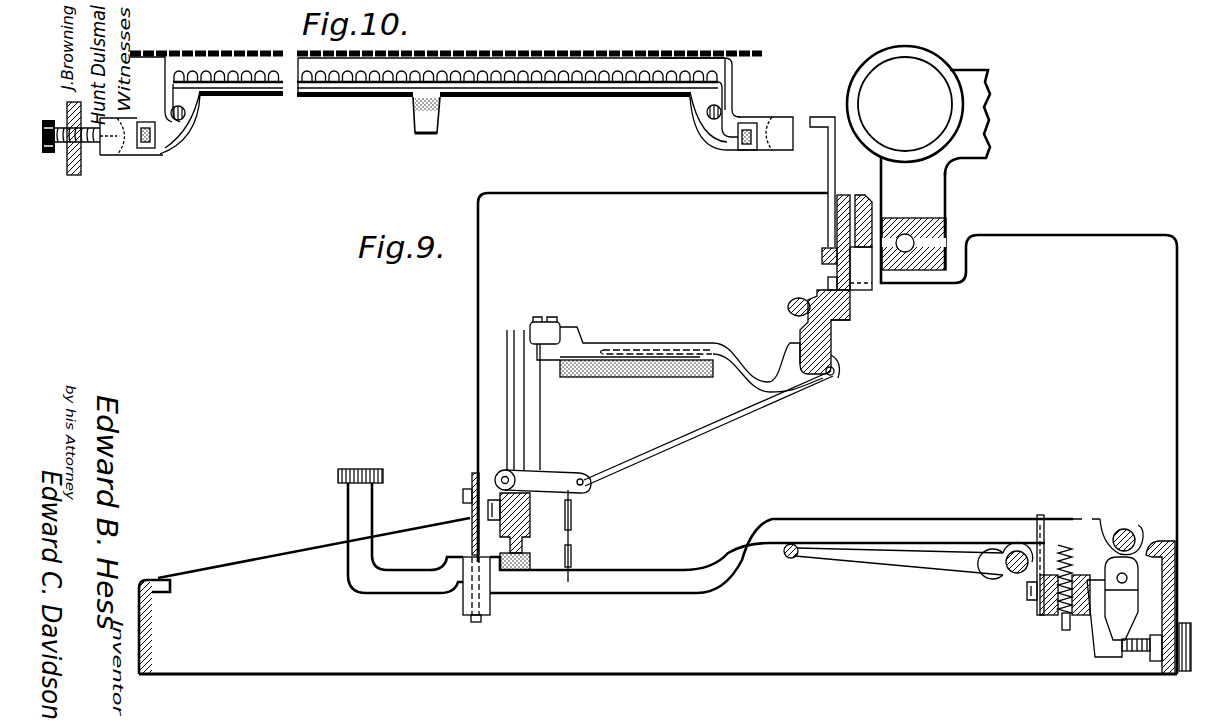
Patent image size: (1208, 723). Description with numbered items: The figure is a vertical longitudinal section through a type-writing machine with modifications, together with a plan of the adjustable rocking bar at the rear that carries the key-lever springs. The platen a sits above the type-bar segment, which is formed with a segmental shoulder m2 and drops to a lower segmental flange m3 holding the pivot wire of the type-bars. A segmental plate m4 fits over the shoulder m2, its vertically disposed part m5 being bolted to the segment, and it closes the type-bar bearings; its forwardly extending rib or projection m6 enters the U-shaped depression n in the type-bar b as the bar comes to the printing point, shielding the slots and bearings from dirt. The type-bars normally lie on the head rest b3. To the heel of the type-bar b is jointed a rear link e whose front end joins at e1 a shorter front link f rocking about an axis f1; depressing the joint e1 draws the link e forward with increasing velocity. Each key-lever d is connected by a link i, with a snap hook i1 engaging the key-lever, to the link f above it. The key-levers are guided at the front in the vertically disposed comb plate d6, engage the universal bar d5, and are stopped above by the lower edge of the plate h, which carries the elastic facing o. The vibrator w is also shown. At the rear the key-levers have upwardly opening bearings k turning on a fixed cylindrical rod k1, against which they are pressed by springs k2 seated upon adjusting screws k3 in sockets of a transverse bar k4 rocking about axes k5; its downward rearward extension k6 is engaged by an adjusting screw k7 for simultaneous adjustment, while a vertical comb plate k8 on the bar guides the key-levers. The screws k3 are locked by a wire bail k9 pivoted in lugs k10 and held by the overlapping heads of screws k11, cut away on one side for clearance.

In FIG. 9, the platen a is at (939, 67).
In FIG. 9, the vibrator w is at (818, 182).
In FIG. 9, the lever body m is at (851, 304).
In FIG. 9, the segmental shoulder m2 is at (849, 322).
In FIG. 9, the lower segmental flange m3 is at (808, 376).
In FIG. 9, the segmental plate m4 is at (828, 297).
In FIG. 9, the vertically disposed part m5 is at (824, 270).
In FIG. 9, the segmental rib or projection m6 is at (797, 315).
In FIG. 9, the type-bar b is at (617, 344).
In FIG. 9, the head rest b3 is at (603, 378).
In FIG. 9, the U-shaped depression n is at (727, 377).
In FIG. 9, the link e is at (707, 424).
In FIG. 9, the joint e1 is at (581, 477).
In FIG. 9, the front link f is at (549, 473).
In FIG. 9, the axis f1 is at (496, 476).
In FIG. 9, the key-lever d is at (813, 519).
In FIG. 9, the universal bar d5 is at (790, 559).
In FIG. 9, the comb plate d6 is at (470, 518).
In FIG. 9, the plate h is at (523, 544).
In FIG. 9, the link i is at (566, 528).
In FIG. 9, the snap hook i1 is at (572, 559).
In FIG. 9, the facing o is at (513, 571).
In FIG. 9, the bearing k is at (1112, 528).
In FIG. 9, the cylindrical rod k1 is at (1125, 528).
In FIG. 9, the spring k2 is at (1078, 579).
In FIG. 10, the adjusting screw k3 is at (513, 86).
In FIG. 9, the adjusting screw k3 is at (1063, 618).
In FIG. 10, the transverse frame or bar k4 is at (592, 64).
In FIG. 9, the transverse frame or bar k4 is at (1040, 612).
In FIG. 10, the axis k5 is at (109, 140).
In FIG. 9, the axis k5 is at (1124, 575).
In FIG. 10, the downward rearward extension k6 is at (415, 130).
In FIG. 9, the downward rearward extension k6 is at (1092, 641).
In FIG. 9, the adjusting screw k7 is at (1185, 676).
In FIG. 10, the comb plate k8 is at (520, 56).
In FIG. 9, the comb plate k8 is at (1040, 573).
In FIG. 10, the wire bail k9 is at (258, 84).
In FIG. 9, the wire bail k9 is at (1085, 619).
In FIG. 10, the lug k10 is at (150, 148).
In FIG. 10, the screw k11 is at (183, 118).